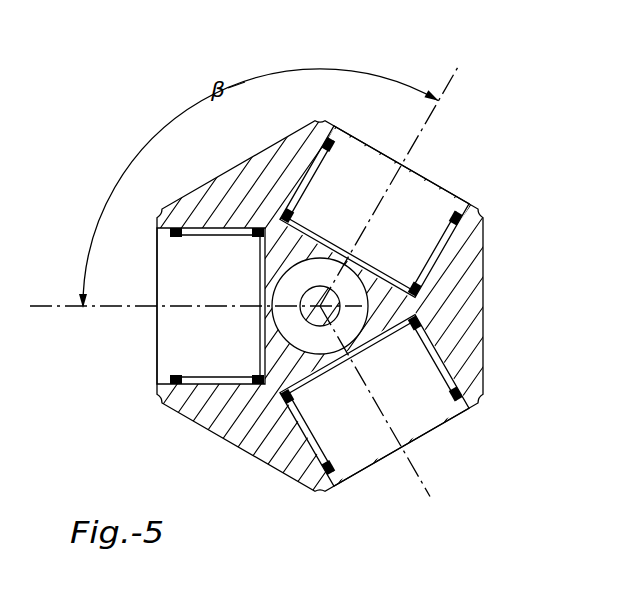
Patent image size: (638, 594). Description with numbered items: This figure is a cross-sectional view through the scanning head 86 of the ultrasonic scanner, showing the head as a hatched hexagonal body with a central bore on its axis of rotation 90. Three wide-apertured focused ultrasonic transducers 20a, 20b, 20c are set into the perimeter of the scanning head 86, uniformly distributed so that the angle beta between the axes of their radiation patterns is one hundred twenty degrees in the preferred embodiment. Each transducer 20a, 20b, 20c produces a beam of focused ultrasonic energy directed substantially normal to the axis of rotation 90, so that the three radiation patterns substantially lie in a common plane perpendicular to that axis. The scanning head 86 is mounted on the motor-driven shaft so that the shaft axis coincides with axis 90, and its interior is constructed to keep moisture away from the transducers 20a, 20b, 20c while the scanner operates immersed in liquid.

The scanning head 86 is at (250, 160).
The axis of rotation 90 is at (362, 338).
The focused ultrasonic transducer 20a is at (427, 432).
The focused ultrasonic transducer 20b is at (157, 331).
The focused ultrasonic transducer 20c is at (427, 180).